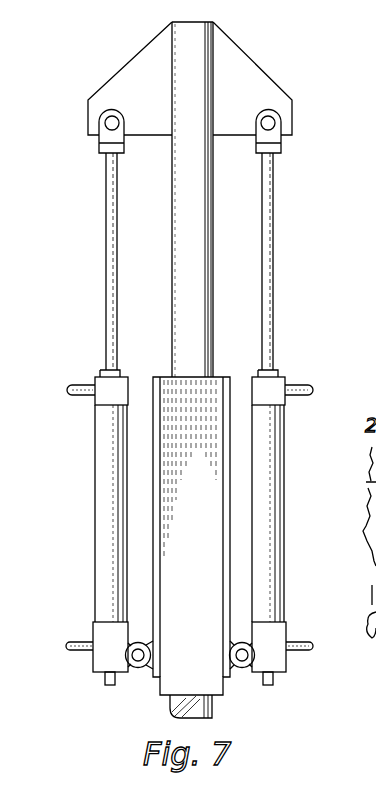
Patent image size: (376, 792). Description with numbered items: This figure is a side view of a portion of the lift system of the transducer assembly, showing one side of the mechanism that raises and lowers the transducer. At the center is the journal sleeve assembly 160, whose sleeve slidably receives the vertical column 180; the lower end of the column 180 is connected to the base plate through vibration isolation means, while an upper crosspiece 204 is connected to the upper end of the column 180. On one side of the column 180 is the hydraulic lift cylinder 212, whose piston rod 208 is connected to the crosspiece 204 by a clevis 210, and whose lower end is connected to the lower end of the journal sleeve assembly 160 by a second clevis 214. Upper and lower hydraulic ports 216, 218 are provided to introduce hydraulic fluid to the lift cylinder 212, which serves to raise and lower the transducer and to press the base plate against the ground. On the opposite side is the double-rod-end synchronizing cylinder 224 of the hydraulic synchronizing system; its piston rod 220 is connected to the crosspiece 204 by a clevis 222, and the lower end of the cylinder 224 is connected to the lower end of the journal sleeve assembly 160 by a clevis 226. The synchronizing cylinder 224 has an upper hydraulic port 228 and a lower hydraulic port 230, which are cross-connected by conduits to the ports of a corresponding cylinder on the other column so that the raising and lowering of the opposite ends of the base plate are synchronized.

The journal sleeve assembly 160 is at (207, 573).
The column 180 is at (177, 275).
The upper crosspiece 204 is at (150, 42).
The piston rod 208 is at (106, 240).
The clevis 210 is at (104, 123).
The hydraulic lift cylinder 212 is at (95, 515).
The second clevis 214 is at (138, 661).
The upper hydraulic port 216 is at (76, 382).
The lower hydraulic port 218 is at (80, 652).
The piston rod 220 is at (273, 240).
The clevis 222 is at (276, 124).
The double-rod-end hydraulic cylinder 224 is at (284, 519).
The clevis 226 is at (242, 661).
The upper hydraulic port 228 is at (300, 385).
The lower hydraulic port 230 is at (288, 652).